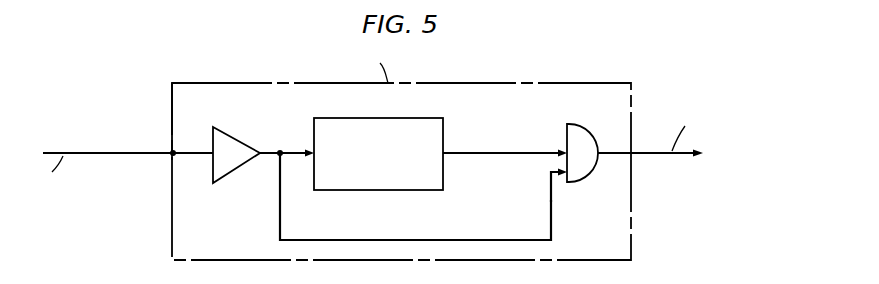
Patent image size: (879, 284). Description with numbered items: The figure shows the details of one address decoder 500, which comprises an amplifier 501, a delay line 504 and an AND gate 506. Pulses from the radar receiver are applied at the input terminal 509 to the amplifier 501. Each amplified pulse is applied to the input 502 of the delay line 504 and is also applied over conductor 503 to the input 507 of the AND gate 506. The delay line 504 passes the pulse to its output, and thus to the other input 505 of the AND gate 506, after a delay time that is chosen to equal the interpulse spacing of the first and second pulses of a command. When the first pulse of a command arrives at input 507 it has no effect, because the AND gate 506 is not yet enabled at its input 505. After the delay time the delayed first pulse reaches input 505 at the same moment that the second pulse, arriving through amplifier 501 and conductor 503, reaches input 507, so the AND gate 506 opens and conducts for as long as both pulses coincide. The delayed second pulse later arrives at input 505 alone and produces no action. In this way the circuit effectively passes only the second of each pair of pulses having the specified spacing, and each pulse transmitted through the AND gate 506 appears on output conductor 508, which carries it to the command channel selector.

The address decoder 500 is at (538, 83).
The amplifier 501 is at (228, 176).
The input of the delay line 502 is at (293, 151).
The conductor 503 is at (393, 240).
The delay line 504 is at (443, 129).
The input of the AND gate from the delay line 505 is at (480, 153).
The AND gate 506 is at (582, 136).
The input of the AND gate from conductor 507 is at (552, 212).
The output conductor 508 is at (652, 153).
The input terminal 509 is at (172, 151).